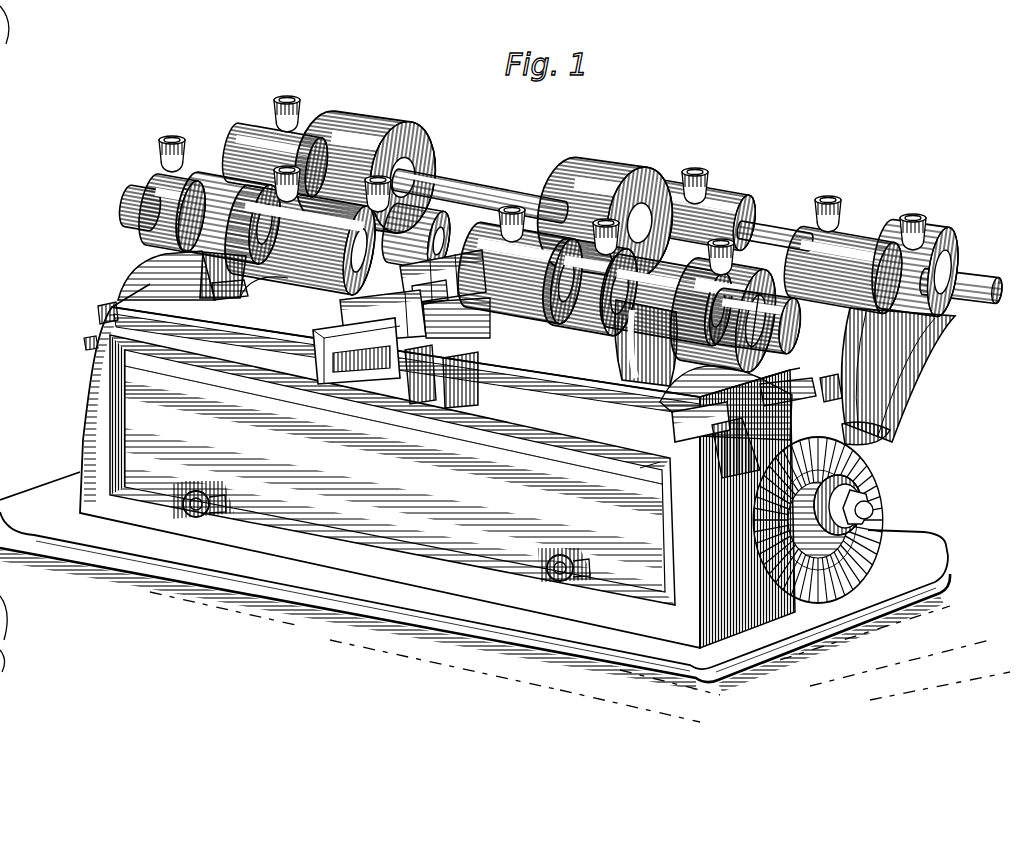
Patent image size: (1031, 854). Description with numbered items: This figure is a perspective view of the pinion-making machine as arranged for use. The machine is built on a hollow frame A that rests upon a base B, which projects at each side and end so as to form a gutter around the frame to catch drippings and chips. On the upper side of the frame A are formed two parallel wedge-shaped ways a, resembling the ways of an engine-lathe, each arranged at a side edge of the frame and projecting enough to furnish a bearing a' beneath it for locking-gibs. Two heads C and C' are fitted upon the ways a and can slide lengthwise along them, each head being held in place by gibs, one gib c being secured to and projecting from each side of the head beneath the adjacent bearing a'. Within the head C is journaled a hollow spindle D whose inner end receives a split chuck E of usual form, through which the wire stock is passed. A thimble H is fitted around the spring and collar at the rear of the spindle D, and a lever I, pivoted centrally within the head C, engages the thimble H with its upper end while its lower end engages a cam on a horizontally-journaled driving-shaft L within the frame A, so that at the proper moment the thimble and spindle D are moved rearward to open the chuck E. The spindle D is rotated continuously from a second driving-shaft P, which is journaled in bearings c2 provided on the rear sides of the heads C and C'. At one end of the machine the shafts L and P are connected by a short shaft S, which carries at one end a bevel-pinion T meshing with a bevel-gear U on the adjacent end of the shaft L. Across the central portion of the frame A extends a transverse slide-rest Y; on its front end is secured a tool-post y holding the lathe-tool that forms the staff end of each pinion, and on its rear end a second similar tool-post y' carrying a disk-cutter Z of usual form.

The hollow frame A is at (427, 466).
The base B is at (505, 597).
The head C is at (203, 275).
The head C' is at (811, 328).
The way a is at (455, 385).
The bearing a' is at (460, 411).
The gib c is at (393, 425).
The bearing c2 is at (718, 212).
The hollow spindle D is at (434, 258).
The split chuck E is at (442, 278).
The thimble H is at (218, 186).
The lever I is at (240, 292).
The driving-shaft L is at (874, 514).
The driving-shaft P is at (455, 190).
The short shaft S is at (892, 436).
The bevel-pinion T is at (866, 470).
The bevel-gear U is at (802, 590).
The slide-rest Y is at (360, 384).
The tool-post y is at (365, 206).
The tool-post y' is at (588, 218).
The disk-cutter Z is at (448, 240).